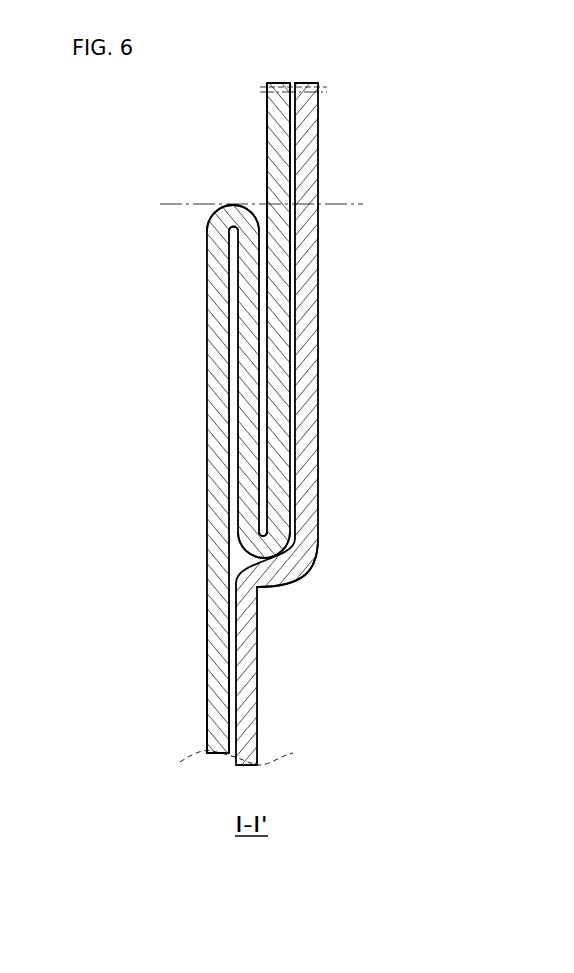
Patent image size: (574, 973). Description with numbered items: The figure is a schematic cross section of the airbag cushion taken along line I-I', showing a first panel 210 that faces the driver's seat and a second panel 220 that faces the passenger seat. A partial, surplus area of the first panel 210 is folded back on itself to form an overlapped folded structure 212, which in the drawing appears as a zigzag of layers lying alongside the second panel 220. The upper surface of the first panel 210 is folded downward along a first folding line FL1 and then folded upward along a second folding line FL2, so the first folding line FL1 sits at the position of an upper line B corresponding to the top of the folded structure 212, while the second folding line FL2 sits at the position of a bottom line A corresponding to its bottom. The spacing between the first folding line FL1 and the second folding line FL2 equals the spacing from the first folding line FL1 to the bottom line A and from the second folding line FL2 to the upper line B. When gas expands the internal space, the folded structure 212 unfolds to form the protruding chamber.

The first panel 210 is at (217, 660).
The folded structure 212 is at (194, 371).
The second panel 220 is at (305, 334).
The first folding line FL1 is at (234, 204).
The second folding line FL2 is at (265, 556).
The bottom line A is at (365, 556).
The upper line B is at (363, 204).